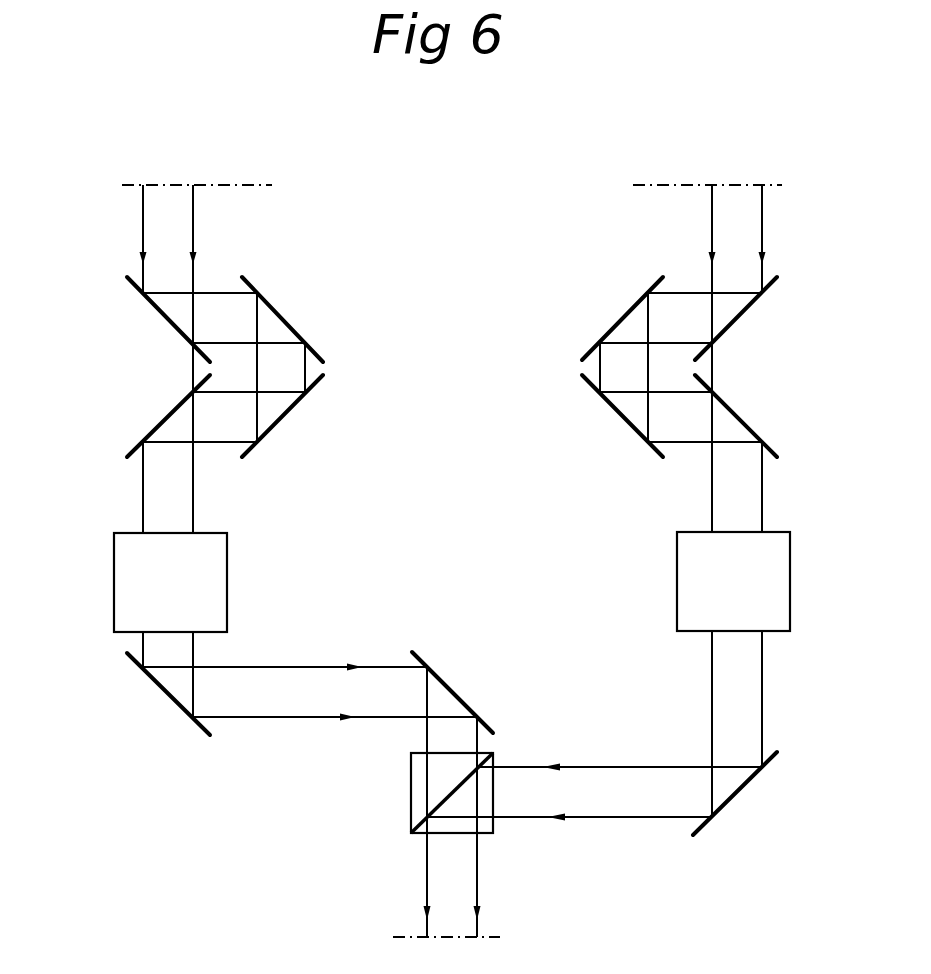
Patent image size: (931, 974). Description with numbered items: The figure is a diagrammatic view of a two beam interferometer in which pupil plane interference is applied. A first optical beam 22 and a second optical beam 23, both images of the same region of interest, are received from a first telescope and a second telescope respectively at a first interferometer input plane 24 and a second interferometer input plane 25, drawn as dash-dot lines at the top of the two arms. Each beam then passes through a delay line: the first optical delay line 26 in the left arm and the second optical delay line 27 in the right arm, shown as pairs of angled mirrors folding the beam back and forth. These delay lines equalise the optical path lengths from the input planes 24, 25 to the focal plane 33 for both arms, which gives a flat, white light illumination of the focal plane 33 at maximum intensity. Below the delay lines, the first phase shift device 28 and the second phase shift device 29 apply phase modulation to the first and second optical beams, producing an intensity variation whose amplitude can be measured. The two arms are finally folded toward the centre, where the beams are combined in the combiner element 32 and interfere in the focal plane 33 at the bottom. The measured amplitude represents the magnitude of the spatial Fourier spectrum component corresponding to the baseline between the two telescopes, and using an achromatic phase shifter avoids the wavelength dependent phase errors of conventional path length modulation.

The first optical beam 22 is at (194, 238).
The second optical beam 23 is at (711, 232).
The first interferometer input plane 24 is at (237, 186).
The second interferometer input plane 25 is at (688, 186).
The first optical delay line 26 is at (299, 329).
The second optical delay line 27 is at (615, 324).
The first phase shift device 28 is at (126, 572).
The second phase shift device 29 is at (778, 586).
The combiner element 32 is at (420, 794).
The focal plane 33 is at (506, 937).